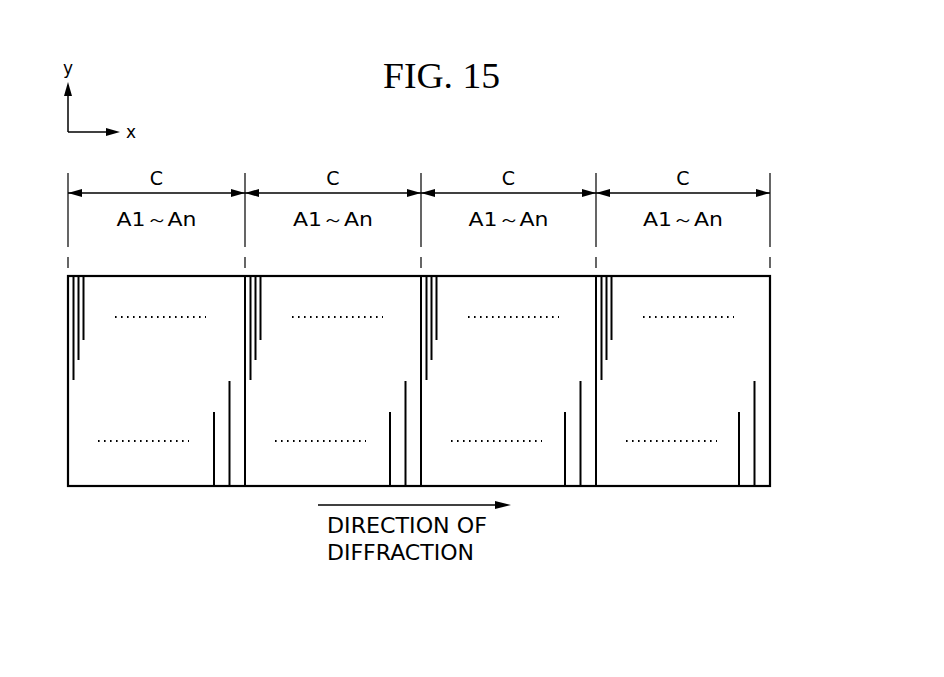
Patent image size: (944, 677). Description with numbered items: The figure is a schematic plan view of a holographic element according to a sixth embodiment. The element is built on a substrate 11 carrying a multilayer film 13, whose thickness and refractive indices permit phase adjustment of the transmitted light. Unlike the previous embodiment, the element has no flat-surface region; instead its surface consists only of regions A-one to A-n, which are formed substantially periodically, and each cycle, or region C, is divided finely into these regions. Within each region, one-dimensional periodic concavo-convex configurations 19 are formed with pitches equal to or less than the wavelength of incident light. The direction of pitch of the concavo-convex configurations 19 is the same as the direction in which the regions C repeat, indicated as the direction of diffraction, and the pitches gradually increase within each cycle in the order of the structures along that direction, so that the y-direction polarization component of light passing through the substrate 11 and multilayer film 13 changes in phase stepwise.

The substrate 11 is at (770, 405).
The multilayer film 13 is at (448, 390).
The concavo-convex configurations 19 is at (147, 257).